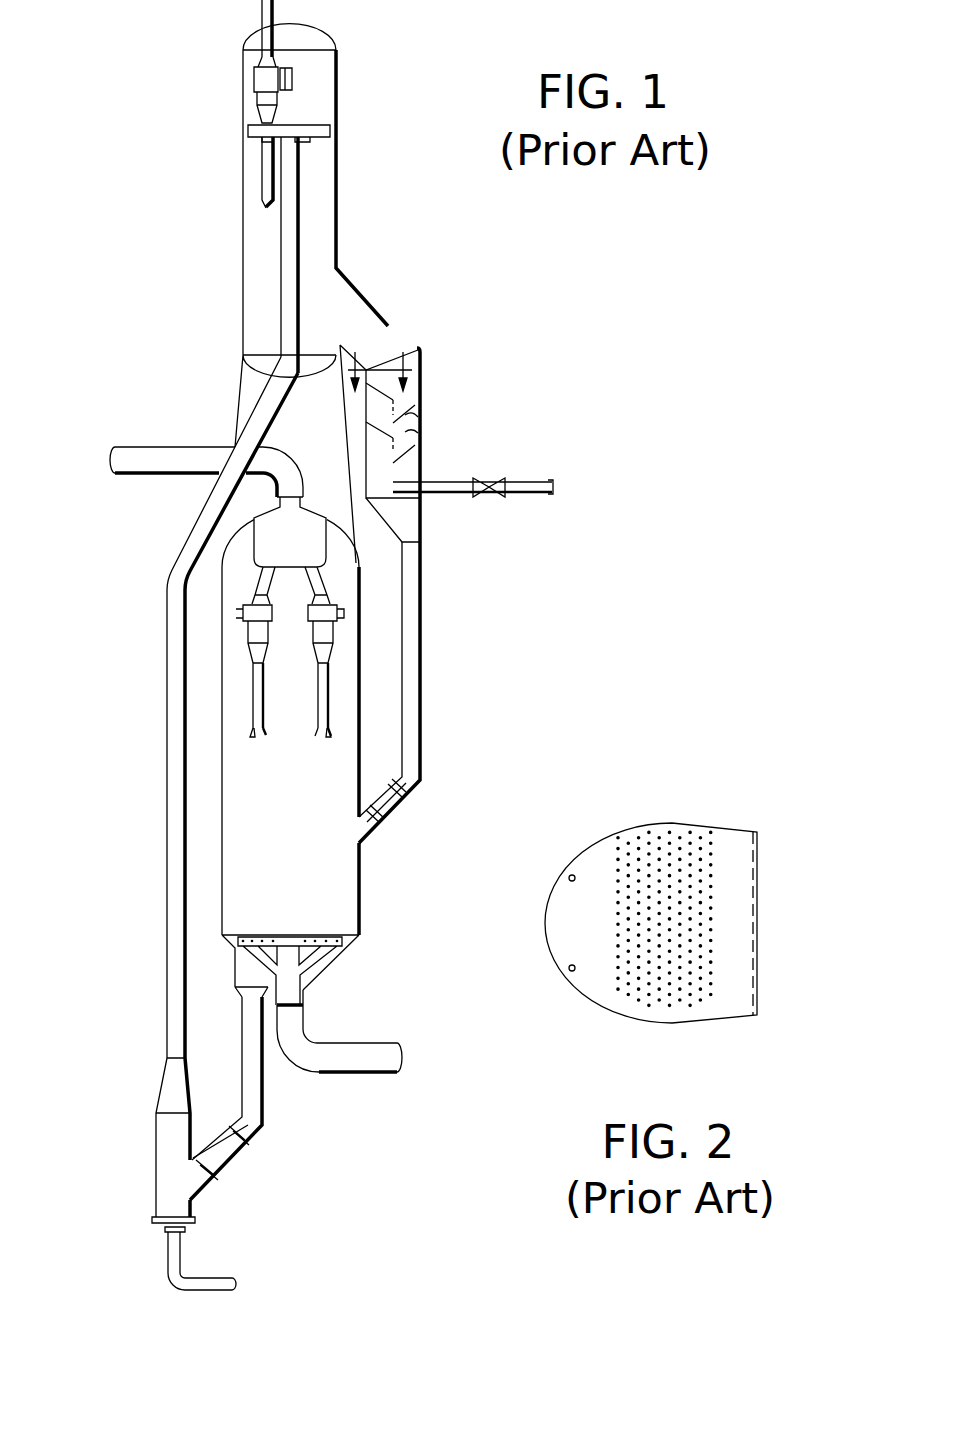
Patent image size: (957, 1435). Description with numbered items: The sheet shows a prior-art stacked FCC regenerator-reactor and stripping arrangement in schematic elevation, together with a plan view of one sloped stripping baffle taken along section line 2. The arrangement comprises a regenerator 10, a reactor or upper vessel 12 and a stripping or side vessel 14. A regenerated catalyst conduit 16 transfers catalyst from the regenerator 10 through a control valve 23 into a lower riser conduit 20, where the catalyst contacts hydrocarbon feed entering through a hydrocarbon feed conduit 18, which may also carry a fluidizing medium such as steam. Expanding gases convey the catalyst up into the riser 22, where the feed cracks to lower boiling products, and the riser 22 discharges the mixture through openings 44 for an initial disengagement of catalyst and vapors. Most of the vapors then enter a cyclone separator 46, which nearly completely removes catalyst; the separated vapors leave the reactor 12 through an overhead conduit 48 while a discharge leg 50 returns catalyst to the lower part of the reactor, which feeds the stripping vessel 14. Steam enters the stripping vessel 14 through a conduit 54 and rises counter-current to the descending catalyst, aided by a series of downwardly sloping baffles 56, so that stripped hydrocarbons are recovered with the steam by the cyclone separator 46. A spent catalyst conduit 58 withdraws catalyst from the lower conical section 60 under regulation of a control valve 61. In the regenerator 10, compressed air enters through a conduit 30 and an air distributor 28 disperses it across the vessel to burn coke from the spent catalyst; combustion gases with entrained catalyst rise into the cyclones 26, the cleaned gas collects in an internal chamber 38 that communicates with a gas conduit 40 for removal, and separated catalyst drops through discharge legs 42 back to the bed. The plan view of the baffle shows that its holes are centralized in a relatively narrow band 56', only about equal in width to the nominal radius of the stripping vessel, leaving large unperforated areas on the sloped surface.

In FIG. 1, the regenerator 10 is at (307, 819).
In FIG. 1, the reactor or upper vessel 12 is at (320, 195).
In FIG. 1, the stripping or side vessel 14 is at (386, 326).
In FIG. 1, the regenerated catalyst conduit 16 is at (263, 1093).
In FIG. 1, the hydrocarbon feed conduit 18 is at (210, 1278).
In FIG. 1, the lower riser conduit 20 is at (155, 1175).
In FIG. 1, the riser 22 is at (167, 645).
In FIG. 1, the control valve 23 is at (228, 1150).
In FIG. 1, the cyclones 26 is at (311, 638).
In FIG. 1, the air distributor 28 is at (262, 935).
In FIG. 1, the conduit 30 is at (348, 1043).
In FIG. 1, the internal chamber 38 is at (306, 547).
In FIG. 1, the gas conduit 40 is at (196, 446).
In FIG. 1, the discharge legs 42 is at (316, 735).
In FIG. 1, the openings 44 is at (320, 138).
In FIG. 1, the cyclone separator 46 is at (260, 63).
In FIG. 1, the overhead conduit 48 is at (320, 0).
In FIG. 1, the discharge leg 50 is at (262, 160).
In FIG. 1, the conduit 54 is at (452, 480).
In FIG. 1, the downwardly sloping baffles 56 is at (425, 423).
In FIG. 2, the downwardly sloping baffles 56 is at (653, 949).
In FIG. 2, the narrow band 56' is at (671, 894).
In FIG. 1, the spent catalyst conduit 58 is at (422, 597).
In FIG. 1, the lower conical section 60 is at (423, 522).
In FIG. 1, the control valve 61 is at (392, 800).
In FIG. 1, the section line 2- 2 is at (380, 356).